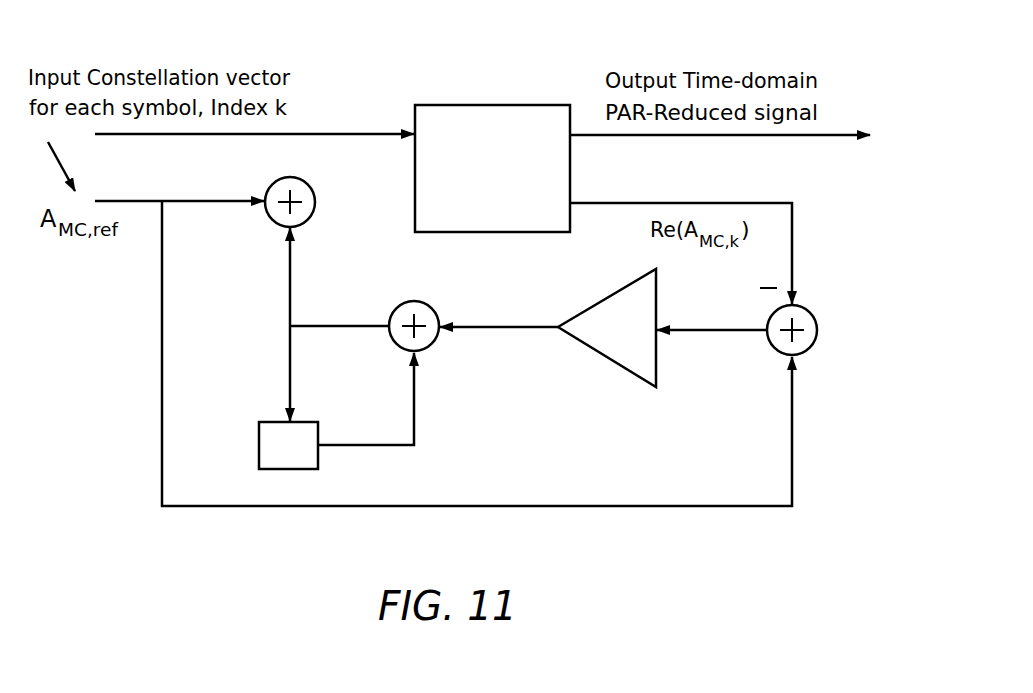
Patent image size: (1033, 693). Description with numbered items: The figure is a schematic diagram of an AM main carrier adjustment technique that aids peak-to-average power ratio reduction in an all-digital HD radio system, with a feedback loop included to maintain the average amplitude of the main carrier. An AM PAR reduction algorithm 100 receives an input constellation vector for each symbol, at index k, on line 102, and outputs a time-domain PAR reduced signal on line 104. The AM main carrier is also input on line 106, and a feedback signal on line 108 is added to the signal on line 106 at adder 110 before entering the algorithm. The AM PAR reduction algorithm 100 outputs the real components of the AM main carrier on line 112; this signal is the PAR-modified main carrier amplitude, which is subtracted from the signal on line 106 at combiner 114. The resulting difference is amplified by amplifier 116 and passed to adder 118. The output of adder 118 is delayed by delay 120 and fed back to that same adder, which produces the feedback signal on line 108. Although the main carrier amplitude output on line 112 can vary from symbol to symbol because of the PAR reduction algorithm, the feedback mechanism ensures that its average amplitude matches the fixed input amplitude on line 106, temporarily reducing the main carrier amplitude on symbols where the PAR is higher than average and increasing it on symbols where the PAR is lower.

The AM PAR reduction algorithm 100 is at (493, 105).
The line 102 is at (345, 133).
The line 104 is at (698, 137).
The line 106 is at (119, 200).
The line 108 is at (291, 283).
The adder 110 is at (273, 184).
The line 112 is at (794, 250).
The combiner 114 is at (814, 341).
The amplifier 116 is at (598, 357).
The adder 118 is at (428, 305).
The delay 120 is at (258, 448).